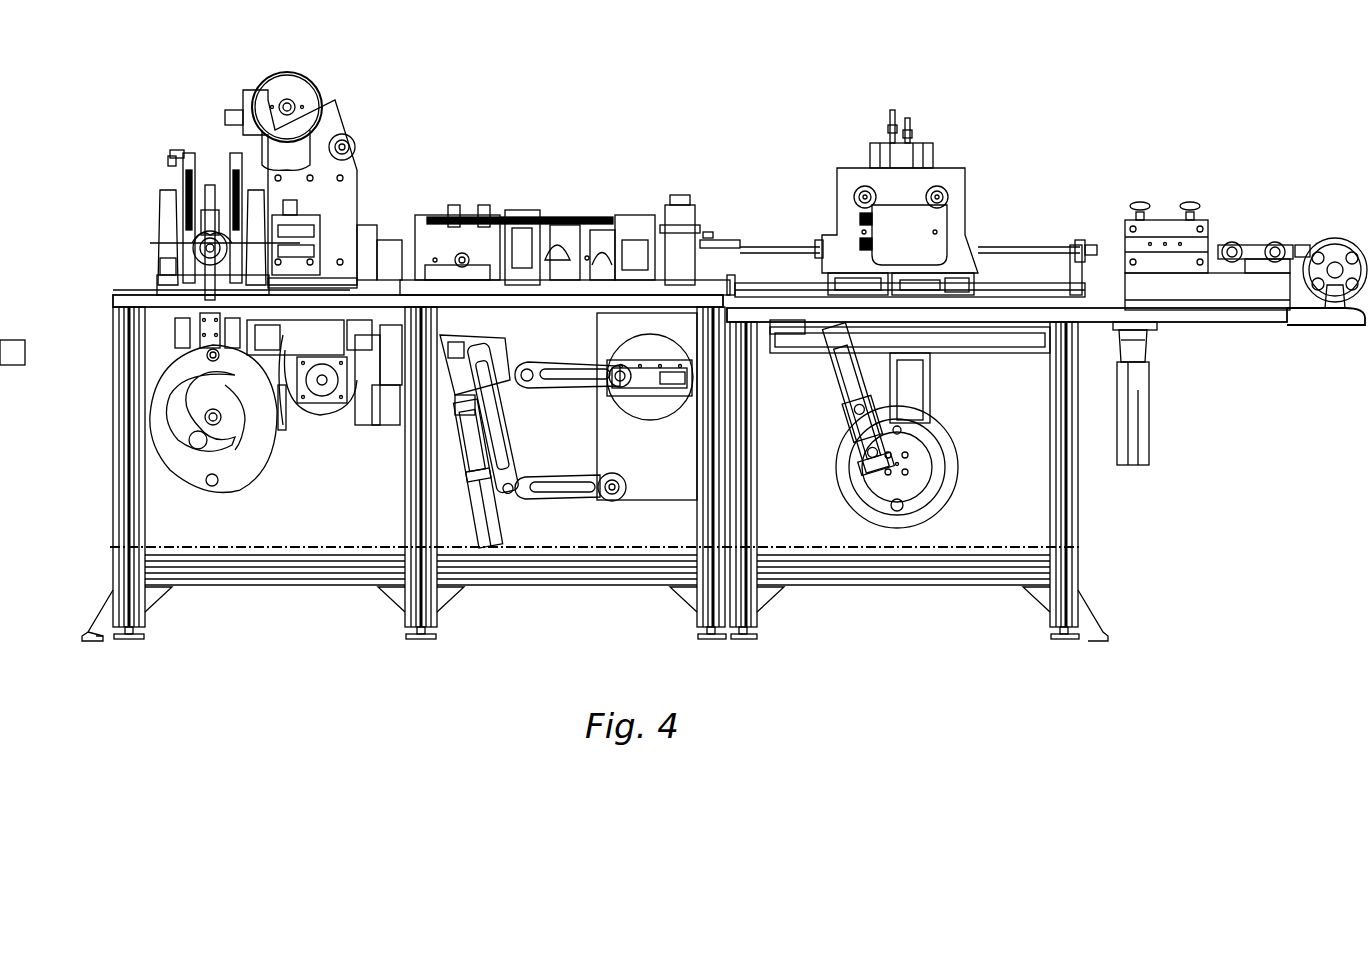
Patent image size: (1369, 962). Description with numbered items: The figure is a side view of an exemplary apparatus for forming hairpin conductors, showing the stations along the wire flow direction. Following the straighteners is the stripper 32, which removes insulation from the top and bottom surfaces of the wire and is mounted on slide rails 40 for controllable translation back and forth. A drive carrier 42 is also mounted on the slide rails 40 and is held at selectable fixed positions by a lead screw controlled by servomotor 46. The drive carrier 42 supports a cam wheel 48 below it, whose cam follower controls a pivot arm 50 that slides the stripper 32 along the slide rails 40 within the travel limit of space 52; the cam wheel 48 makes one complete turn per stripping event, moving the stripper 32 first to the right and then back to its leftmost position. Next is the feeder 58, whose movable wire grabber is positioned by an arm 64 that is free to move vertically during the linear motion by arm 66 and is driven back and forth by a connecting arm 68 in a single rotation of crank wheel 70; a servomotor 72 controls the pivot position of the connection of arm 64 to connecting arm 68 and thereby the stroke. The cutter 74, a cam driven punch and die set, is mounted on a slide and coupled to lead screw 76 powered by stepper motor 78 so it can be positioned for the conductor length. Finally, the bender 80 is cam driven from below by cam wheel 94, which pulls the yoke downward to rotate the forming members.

The stripper 32 is at (970, 183).
The slide rails 40 is at (737, 298).
The drive carrier 42 is at (933, 297).
The servomotor 46 is at (1150, 423).
The cam wheel 48 is at (945, 432).
The pivot arm 50 is at (848, 365).
The space 52 is at (865, 290).
The feeder 58 is at (507, 185).
The arm 64 is at (509, 422).
The arm 66 is at (577, 497).
The connecting arm 68 is at (557, 362).
The crank wheel 70 is at (667, 410).
The servomotor 72 is at (505, 527).
The cutter 74 is at (340, 100).
The lead screw 76 is at (283, 425).
The stepper motor 78 is at (368, 405).
The bender 80 is at (190, 135).
The cam wheel 94 is at (243, 470).